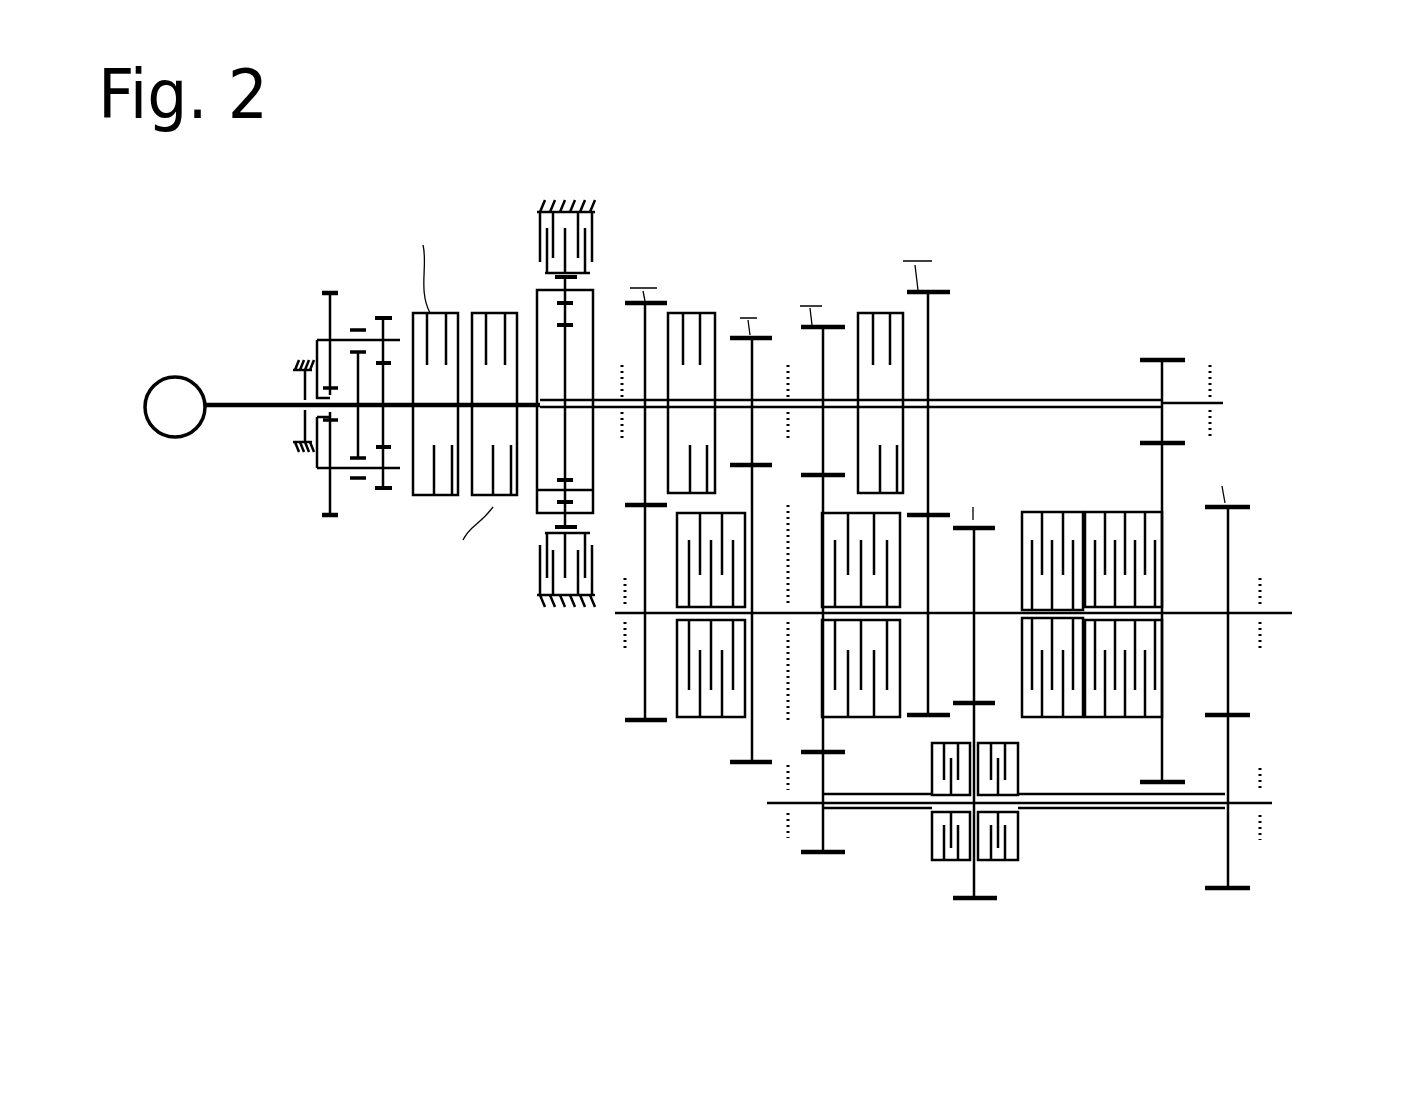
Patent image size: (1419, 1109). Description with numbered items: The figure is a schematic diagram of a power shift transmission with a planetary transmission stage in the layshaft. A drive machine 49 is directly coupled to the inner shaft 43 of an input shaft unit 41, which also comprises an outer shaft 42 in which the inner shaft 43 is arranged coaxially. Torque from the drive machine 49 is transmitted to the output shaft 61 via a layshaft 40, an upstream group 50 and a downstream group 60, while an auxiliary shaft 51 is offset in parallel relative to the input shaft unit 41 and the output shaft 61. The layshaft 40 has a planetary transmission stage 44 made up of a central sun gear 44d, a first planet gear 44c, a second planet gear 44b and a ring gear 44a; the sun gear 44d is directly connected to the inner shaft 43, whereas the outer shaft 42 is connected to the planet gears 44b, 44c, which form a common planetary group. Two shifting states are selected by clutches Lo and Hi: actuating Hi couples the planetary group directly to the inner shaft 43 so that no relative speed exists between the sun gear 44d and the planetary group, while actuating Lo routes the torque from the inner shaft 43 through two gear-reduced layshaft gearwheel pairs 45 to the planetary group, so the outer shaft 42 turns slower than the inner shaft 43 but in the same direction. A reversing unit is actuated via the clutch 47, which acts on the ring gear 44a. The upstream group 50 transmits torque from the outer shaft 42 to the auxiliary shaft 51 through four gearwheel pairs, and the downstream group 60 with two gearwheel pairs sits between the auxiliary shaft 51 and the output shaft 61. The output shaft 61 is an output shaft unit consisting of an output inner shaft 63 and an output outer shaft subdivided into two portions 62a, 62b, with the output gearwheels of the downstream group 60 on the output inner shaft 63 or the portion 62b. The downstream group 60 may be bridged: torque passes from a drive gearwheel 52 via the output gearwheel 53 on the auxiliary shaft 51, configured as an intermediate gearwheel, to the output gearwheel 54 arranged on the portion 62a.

The drive machine 49 is at (167, 435).
The layshaft gearwheel pairs 45 is at (321, 347).
The layshaft 40 is at (451, 463).
The planetary transmission stage 44 is at (516, 326).
The ring gear 44a is at (573, 280).
The second planet gear 44b is at (572, 287).
The first planet gear 44c is at (560, 497).
The sun gear 44d is at (563, 443).
The clutch 47 is at (558, 203).
The upstream group 50 is at (925, 502).
The drive gearwheel 52 is at (825, 358).
The output gearwheel 53 is at (812, 722).
The output gearwheel 54 is at (820, 827).
The input shaft unit 41 is at (881, 309).
The outer shaft 42 is at (1076, 392).
The inner shaft 43 is at (1197, 372).
The auxiliary shaft 51 is at (1282, 607).
The downstream group 60 is at (1157, 751).
The output shaft 61 is at (1019, 896).
The portion of output outer shaft 62a is at (887, 808).
The portion of output outer shaft 62b is at (1093, 808).
The output inner shaft 63 is at (1275, 800).